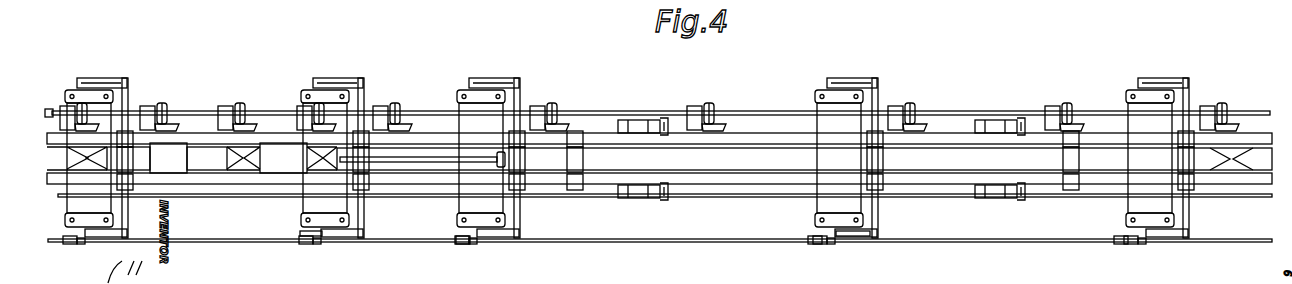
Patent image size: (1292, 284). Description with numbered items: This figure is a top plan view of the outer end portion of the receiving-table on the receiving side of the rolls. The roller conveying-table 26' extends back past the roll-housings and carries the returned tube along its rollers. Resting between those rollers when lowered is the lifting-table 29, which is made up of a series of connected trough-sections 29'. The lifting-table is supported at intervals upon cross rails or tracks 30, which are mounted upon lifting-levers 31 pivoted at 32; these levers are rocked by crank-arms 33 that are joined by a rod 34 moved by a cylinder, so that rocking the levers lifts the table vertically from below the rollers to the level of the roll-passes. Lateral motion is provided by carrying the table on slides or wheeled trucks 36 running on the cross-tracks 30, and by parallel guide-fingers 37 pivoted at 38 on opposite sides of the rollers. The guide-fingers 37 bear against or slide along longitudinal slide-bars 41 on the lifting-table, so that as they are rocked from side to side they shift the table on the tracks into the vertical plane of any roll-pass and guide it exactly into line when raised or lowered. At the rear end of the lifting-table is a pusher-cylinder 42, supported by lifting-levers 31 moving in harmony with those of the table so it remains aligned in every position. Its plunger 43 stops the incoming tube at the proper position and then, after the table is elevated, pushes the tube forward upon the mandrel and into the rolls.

The conveying-table 26' is at (175, 128).
The lifting-table 29 is at (283, 158).
The trough-sections 29' is at (182, 187).
The cross rails or tracks 30 is at (518, 213).
The lifting-levers 31 is at (867, 238).
The pivot 32 is at (310, 243).
The crank-arms 33 is at (822, 246).
The rod 34 is at (667, 243).
The slides or wheeled trucks 36 is at (364, 188).
The guide-fingers 37 is at (670, 130).
The pivot 38 is at (633, 128).
The longitudinal slide-bars 41 is at (243, 137).
The pusher-cylinder 42 is at (770, 160).
The plunger 43 is at (443, 163).